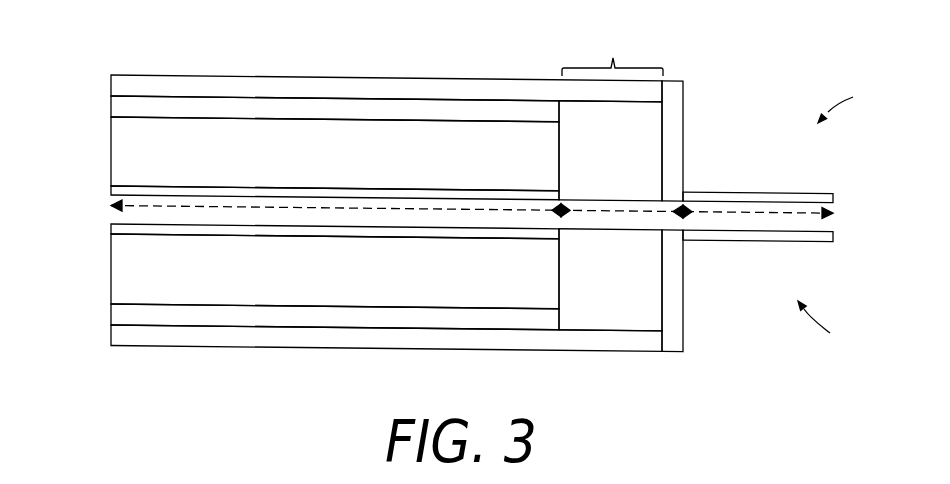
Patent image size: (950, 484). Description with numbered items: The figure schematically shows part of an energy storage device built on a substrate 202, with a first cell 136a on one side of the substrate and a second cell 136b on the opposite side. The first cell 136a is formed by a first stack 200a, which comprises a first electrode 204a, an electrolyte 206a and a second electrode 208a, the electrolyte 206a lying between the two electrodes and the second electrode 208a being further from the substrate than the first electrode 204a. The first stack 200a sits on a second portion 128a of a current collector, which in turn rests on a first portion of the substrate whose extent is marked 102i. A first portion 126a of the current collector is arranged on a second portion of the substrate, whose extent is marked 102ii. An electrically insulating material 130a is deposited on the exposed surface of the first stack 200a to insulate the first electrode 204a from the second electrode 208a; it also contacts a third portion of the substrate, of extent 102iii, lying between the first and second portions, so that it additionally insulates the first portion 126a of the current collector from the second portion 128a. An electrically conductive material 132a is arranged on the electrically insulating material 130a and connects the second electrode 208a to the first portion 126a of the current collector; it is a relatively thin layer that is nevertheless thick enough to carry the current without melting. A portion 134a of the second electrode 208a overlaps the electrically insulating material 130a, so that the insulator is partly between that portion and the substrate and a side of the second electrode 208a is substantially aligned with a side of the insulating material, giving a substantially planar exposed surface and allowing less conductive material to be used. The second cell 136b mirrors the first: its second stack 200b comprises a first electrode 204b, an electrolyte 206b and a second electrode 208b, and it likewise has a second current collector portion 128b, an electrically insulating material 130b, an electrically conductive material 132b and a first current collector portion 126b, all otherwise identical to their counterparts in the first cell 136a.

The first stack 200a is at (108, 75).
The second stack 200b is at (108, 346).
The substrate 202 is at (835, 217).
The first electrode 204a is at (385, 167).
The first electrode 204b is at (327, 292).
The electrolyte 206a is at (217, 96).
The electrolyte 206b is at (193, 327).
The second electrode 208a is at (385, 77).
The second electrode 208b is at (293, 350).
The second portion of the current collector 128a is at (227, 187).
The second portion of the current collector 128b is at (223, 237).
The electrically insulating material 130a is at (643, 166).
The electrically insulating material 130b is at (640, 295).
The electrically conductive material 132a is at (682, 127).
The electrically conductive material 132b is at (682, 327).
The first portion of the current collector 126a is at (757, 193).
The first portion of the current collector 126b is at (814, 244).
The portion of the second electrode 134a is at (612, 51).
The first cell 136a is at (851, 98).
The second cell 136b is at (828, 331).
The extent of the first portion of the substrate 102i is at (337, 210).
The extent of the second portion of the substrate 102ii is at (730, 213).
The extent of the third portion of the substrate 102iii is at (583, 212).